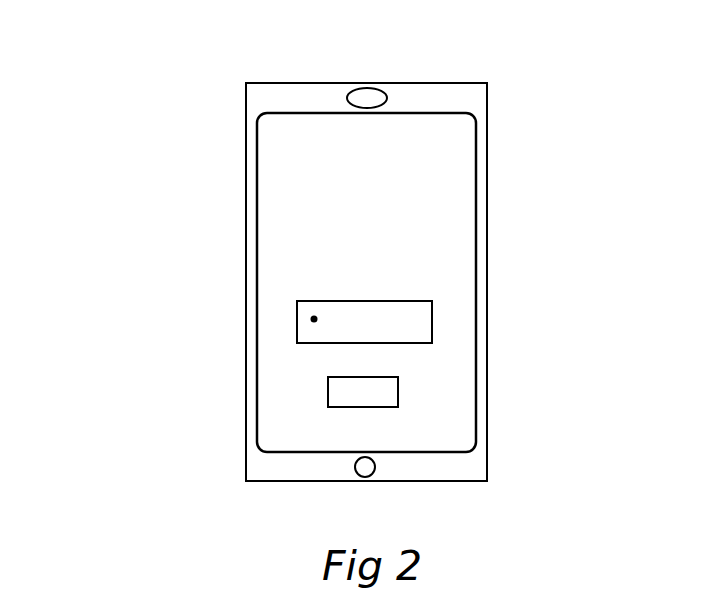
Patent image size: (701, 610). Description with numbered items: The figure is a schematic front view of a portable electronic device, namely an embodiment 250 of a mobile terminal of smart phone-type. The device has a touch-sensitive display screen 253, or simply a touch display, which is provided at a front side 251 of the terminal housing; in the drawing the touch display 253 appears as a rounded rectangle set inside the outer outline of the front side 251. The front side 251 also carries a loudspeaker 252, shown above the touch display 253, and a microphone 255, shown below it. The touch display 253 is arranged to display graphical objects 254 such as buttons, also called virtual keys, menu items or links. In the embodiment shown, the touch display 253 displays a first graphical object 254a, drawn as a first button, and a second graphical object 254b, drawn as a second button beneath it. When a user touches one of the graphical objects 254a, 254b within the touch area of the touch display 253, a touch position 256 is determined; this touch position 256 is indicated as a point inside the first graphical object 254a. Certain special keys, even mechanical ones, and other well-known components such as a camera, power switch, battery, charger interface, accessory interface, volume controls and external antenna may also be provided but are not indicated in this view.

The mobile terminal embodiment 250 is at (142, 61).
The front side 251 is at (258, 113).
The loudspeaker 252 is at (359, 97).
The touch-sensitive display screen 253 is at (257, 152).
The graphical objects 254 is at (288, 356).
The first graphical object 254a is at (432, 327).
The second graphical object 254b is at (398, 387).
The microphone 255 is at (358, 474).
The touch position 256 is at (314, 319).